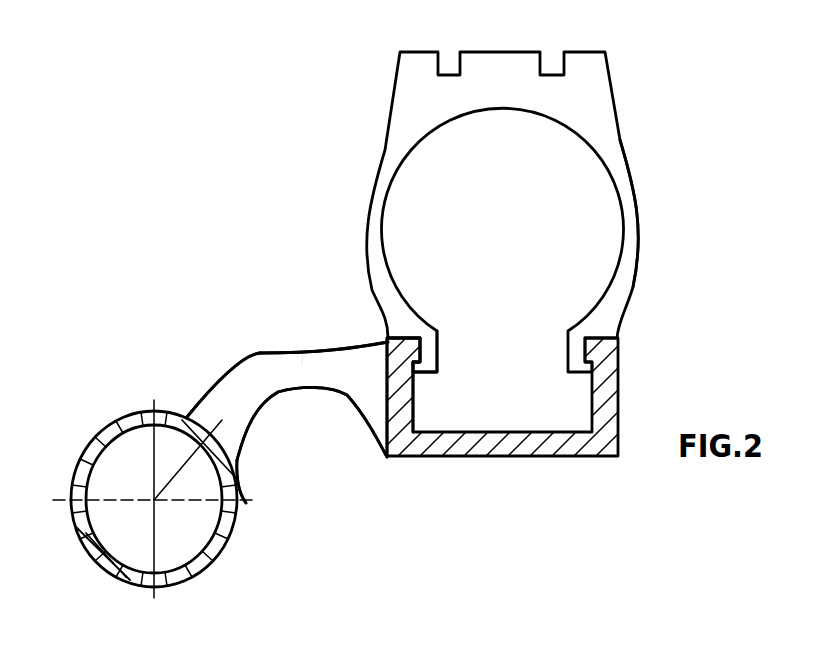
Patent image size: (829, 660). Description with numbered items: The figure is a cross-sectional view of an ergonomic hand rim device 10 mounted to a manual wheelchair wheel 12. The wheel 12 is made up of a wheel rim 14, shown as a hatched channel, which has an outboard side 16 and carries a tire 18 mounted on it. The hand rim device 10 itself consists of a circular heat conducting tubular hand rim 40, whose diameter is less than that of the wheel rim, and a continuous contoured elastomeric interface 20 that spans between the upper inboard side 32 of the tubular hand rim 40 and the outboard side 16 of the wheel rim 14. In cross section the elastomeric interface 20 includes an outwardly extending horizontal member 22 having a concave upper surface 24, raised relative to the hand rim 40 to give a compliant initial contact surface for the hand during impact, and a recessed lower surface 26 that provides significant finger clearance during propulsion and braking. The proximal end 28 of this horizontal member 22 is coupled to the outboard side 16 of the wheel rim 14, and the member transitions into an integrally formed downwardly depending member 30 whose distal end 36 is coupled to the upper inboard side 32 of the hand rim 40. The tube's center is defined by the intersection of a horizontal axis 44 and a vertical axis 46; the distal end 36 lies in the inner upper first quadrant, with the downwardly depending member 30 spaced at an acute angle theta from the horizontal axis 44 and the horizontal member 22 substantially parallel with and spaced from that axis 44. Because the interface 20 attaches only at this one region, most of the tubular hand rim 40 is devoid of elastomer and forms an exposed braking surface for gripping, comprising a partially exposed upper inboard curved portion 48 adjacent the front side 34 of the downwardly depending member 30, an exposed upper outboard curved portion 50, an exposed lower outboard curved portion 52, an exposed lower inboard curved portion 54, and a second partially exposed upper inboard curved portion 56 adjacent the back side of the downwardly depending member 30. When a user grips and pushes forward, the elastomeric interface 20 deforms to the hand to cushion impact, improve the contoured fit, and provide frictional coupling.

The ergonomic hand rim device 10 is at (143, 139).
The wheelchair wheel 12 is at (373, 137).
The wheel rim 14 is at (520, 438).
The outboard side 16 is at (408, 400).
The tire 18 is at (607, 132).
The continuous contoured elastomeric interface 20 is at (258, 313).
The outwardly extending horizontal member 22 is at (302, 365).
The concave upper surface 24 is at (320, 352).
The recessed lower surface 26 is at (327, 390).
The proximal end 28 is at (394, 392).
The downwardly depending member 30 is at (228, 402).
The upper inboard side 32 is at (253, 500).
The front side 34 is at (232, 368).
The distal end 36 is at (248, 433).
The circular heat conducting tubular hand rim 40 is at (113, 398).
The horizontal axis 44 is at (135, 498).
The vertical axis 46 is at (158, 518).
The partially exposed upper inboard curved portion 48 is at (178, 408).
The exposed upper outboard curved portion 50 is at (88, 433).
The exposed lower outboard curved portion 52 is at (92, 562).
The exposed lower inboard curved portion 54 is at (210, 567).
The second partially exposed upper inboard curved portion 56 is at (247, 503).